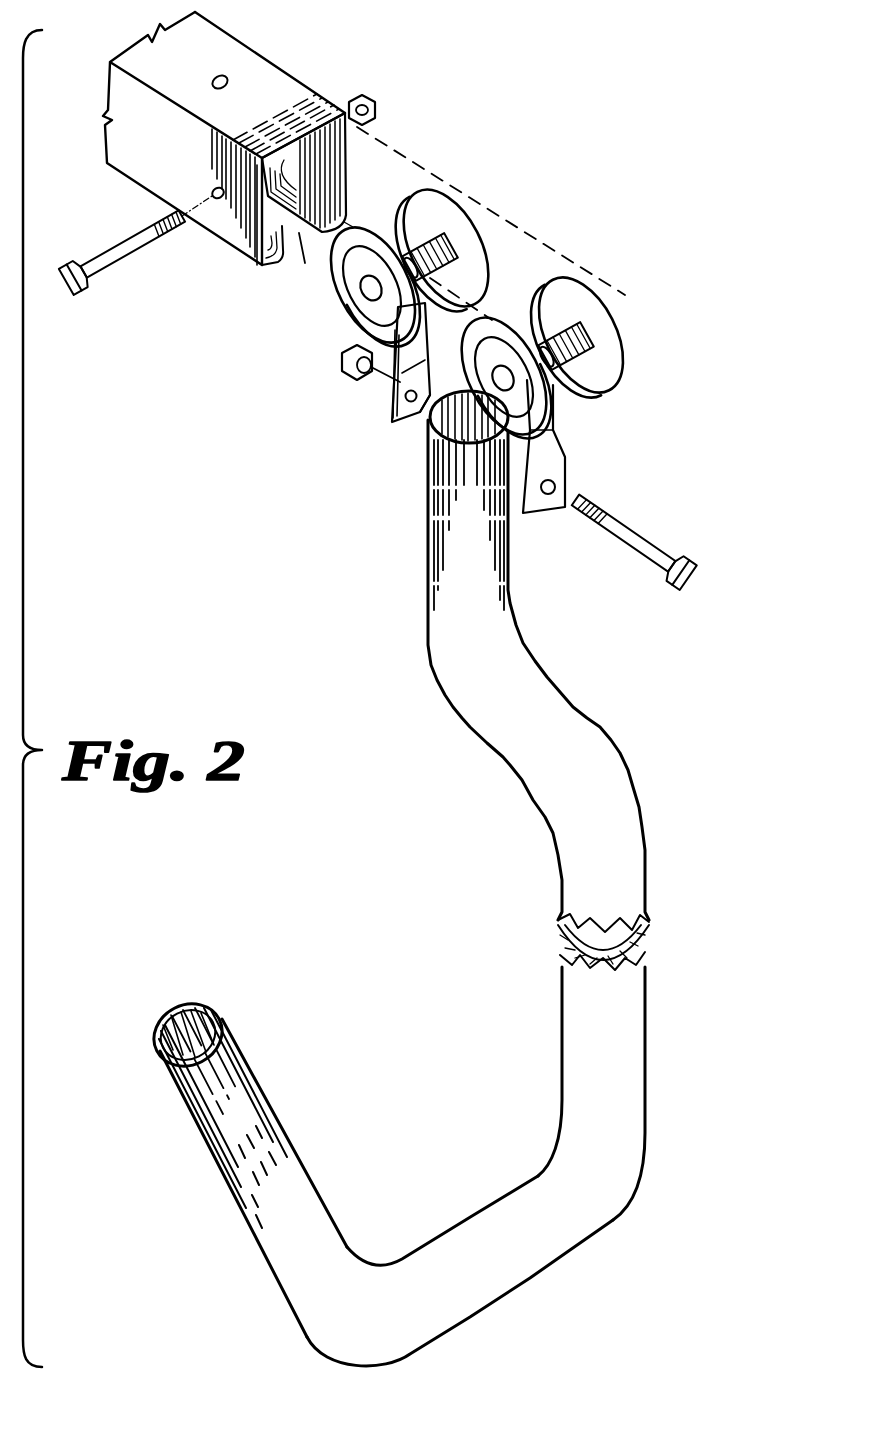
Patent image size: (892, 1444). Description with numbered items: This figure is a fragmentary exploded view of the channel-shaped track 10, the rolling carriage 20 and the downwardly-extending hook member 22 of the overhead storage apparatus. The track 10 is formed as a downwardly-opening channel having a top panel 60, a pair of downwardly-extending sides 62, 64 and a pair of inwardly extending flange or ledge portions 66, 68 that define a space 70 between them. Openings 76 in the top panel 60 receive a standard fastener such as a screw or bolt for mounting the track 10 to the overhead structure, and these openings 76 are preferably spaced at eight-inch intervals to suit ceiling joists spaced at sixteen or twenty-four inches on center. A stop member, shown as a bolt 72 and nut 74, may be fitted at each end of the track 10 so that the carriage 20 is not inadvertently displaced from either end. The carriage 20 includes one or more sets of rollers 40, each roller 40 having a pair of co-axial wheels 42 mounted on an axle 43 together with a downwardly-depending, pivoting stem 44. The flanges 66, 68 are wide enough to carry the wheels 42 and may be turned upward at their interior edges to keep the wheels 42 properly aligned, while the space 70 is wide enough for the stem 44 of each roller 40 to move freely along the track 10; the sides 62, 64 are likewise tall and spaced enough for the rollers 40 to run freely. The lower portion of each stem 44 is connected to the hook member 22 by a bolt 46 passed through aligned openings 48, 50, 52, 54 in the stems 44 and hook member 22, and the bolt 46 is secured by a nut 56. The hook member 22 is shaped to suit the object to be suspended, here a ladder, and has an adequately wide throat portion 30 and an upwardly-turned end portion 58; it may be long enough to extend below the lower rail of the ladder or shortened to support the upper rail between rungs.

The track 10 is at (258, 174).
The carriage 20 is at (489, 363).
The hook member 22 is at (441, 878).
The throat portion 30 is at (450, 1227).
The roller 40 is at (499, 294).
The wheel 42 is at (340, 287).
The axle 43 is at (455, 246).
The stem 44 is at (492, 408).
The bolt 46 is at (633, 540).
The opening 48 is at (555, 483).
The opening 50 is at (493, 440).
The opening 52 is at (427, 423).
The opening 54 is at (407, 403).
The nut 56 is at (338, 353).
The upwardly-turned end portion 58 is at (230, 1077).
The top panel 60 is at (295, 97).
The side 62 is at (344, 163).
The side 64 is at (238, 228).
The flange or ledge portion 66 is at (353, 226).
The flange or ledge portion 68 is at (267, 264).
The space 70 is at (297, 264).
The bolt 72 is at (120, 251).
The nut 74 is at (374, 98).
The opening 76 is at (222, 76).